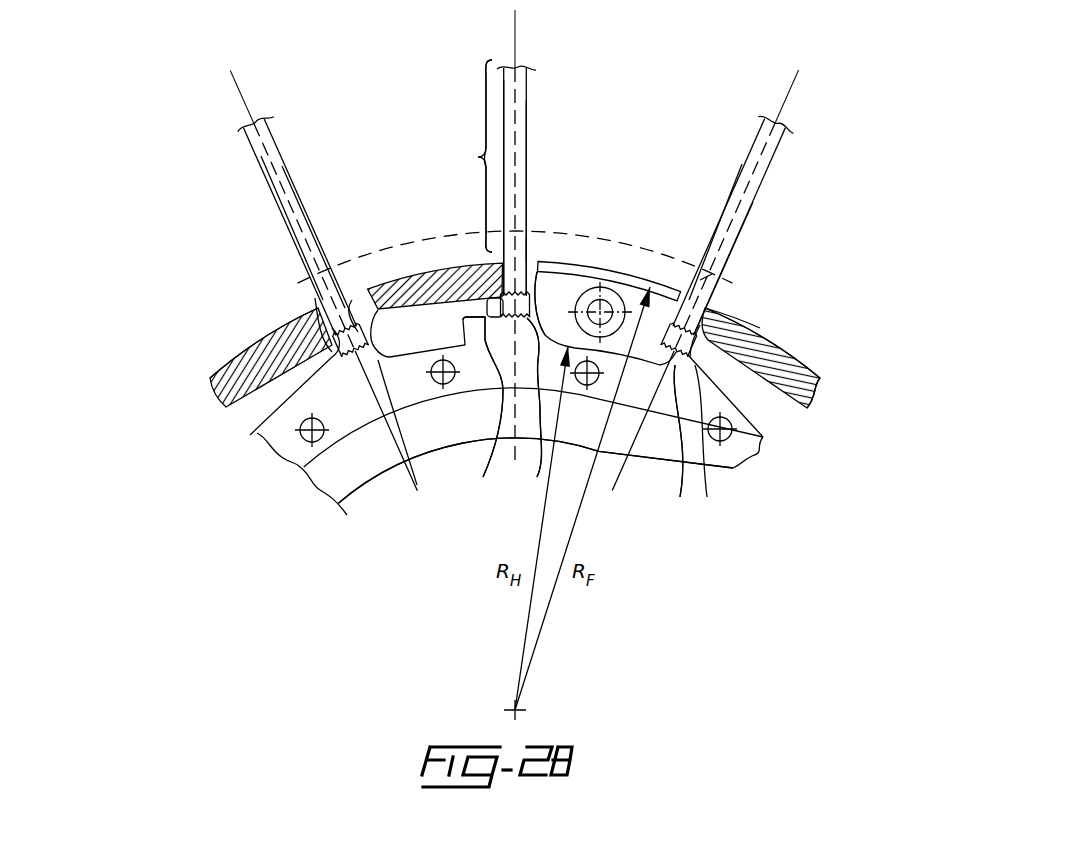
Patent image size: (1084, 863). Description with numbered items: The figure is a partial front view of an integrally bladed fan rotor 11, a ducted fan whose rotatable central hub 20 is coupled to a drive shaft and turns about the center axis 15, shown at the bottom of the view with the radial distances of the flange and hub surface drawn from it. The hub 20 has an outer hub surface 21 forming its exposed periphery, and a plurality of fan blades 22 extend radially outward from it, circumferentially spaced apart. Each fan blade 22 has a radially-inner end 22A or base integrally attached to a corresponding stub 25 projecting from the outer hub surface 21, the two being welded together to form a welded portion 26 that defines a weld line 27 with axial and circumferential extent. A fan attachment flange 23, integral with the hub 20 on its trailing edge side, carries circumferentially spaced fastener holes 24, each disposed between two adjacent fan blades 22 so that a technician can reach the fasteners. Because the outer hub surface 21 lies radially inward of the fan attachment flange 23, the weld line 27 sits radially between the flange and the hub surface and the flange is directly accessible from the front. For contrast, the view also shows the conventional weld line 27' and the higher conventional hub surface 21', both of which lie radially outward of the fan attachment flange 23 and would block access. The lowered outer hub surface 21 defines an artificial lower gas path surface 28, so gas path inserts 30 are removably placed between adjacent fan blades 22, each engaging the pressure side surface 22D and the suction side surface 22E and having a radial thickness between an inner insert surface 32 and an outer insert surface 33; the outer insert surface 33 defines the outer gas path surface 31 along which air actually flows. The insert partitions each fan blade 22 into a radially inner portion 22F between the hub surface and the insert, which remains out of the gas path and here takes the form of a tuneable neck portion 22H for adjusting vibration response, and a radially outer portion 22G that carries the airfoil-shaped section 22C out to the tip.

The integrally bladed fan rotor 11 is at (856, 214).
The center axis 15 is at (518, 711).
The central hub 20 is at (357, 472).
The outer hub surface 21 is at (541, 392).
The hub surface of conventional integrally bladed fan rotor 21' is at (515, 235).
The fan blade 22 is at (283, 181).
The radially-inner end 22A is at (301, 336).
The airfoil-shaped section 22C is at (457, 156).
The pressure side surface 22D is at (283, 165).
The suction side surface 22E is at (261, 157).
The radially inner portion 22F is at (480, 422).
The radially outer portion 22G is at (456, 156).
The tuneable neck portion 22H is at (497, 424).
The fan attachment flange 23 is at (603, 288).
The fastener hole 24 is at (648, 283).
The stub 25 is at (338, 370).
The welded portion 26 is at (421, 476).
The weld line 27 is at (537, 280).
The weld line of conventional integrally bladed fan rotor 27' is at (663, 220).
The gas path surface 28 is at (404, 357).
The gas path insert 30 is at (374, 288).
The outer gas path surface 31 is at (248, 351).
The inner insert surface 32 is at (806, 405).
The outer insert surface 33 is at (746, 320).